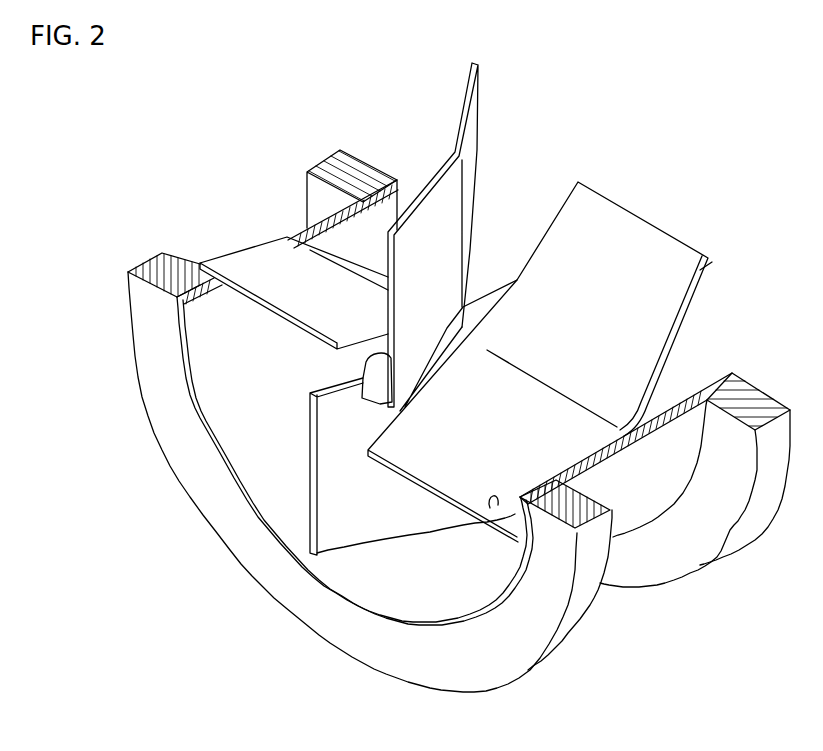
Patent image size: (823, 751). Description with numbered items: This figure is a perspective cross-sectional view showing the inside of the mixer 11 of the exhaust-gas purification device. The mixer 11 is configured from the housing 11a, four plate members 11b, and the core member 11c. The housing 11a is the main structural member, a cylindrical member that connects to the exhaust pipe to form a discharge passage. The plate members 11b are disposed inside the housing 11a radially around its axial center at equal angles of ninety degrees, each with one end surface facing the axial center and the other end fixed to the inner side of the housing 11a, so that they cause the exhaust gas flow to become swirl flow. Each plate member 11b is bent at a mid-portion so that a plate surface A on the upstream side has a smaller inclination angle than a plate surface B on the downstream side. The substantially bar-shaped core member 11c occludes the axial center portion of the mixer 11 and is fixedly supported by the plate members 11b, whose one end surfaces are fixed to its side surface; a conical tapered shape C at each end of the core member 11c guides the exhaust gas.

The mixer 11 is at (181, 126).
The housing 11a is at (303, 230).
The plate member 11b is at (238, 262).
The core member 11c is at (488, 297).
The plate surface A is at (330, 409).
The plate surface B is at (689, 273).
The tapered shape C is at (377, 385).